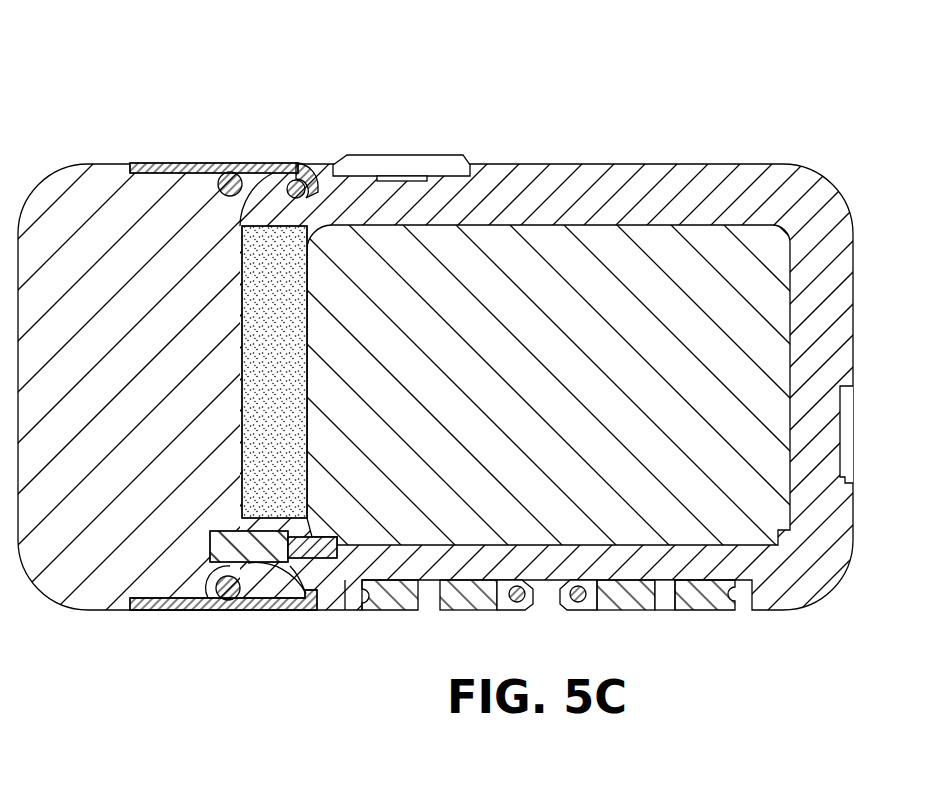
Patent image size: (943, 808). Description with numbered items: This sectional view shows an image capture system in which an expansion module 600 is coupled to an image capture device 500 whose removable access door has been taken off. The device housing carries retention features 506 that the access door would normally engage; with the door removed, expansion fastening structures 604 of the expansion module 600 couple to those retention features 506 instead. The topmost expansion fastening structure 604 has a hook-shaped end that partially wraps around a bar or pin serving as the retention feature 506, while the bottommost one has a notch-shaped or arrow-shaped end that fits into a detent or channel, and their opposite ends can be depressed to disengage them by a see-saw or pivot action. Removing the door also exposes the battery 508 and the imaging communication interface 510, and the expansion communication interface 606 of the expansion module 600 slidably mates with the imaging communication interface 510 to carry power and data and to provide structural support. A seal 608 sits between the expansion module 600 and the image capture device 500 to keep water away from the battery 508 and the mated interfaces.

The image capture device 500 is at (755, 164).
The retention features 506 is at (302, 165).
The battery 508 is at (538, 395).
The imaging communication interface 510 is at (306, 595).
The expansion module 600 is at (105, 164).
The expansion fastening structures 604 is at (165, 163).
The expansion communication interface 606 is at (208, 600).
The seal 608 is at (265, 226).